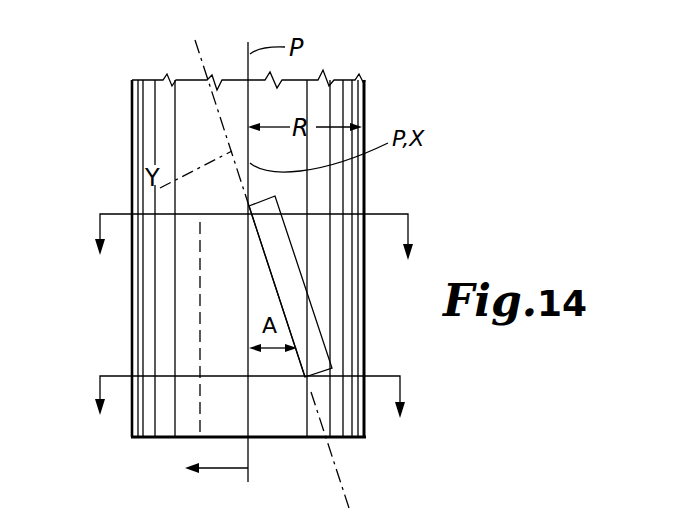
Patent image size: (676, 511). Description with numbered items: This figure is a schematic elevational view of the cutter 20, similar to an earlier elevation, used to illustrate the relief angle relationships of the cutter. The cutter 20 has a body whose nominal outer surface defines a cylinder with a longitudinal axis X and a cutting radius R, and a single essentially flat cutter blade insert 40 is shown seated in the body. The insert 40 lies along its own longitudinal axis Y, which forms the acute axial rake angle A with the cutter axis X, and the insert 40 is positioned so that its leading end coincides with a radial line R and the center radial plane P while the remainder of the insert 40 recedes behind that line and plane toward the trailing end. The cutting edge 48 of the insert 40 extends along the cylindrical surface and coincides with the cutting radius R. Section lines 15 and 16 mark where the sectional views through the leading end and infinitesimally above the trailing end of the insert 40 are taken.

The cutter 20 is at (122, 147).
The cutter blade insert 40 is at (322, 306).
The cutting edge 48 is at (266, 258).
The section line for FIG. 15 is at (254, 255).
The section line for FIG. 16 is at (255, 416).